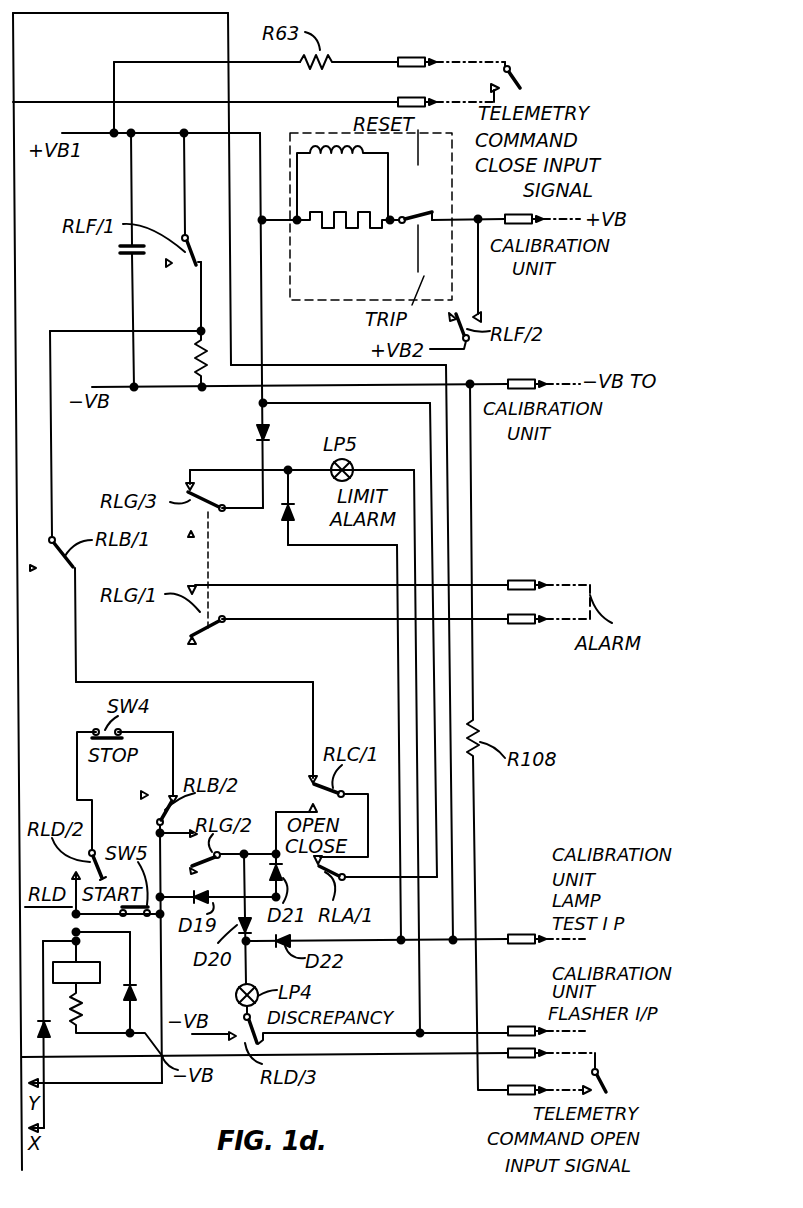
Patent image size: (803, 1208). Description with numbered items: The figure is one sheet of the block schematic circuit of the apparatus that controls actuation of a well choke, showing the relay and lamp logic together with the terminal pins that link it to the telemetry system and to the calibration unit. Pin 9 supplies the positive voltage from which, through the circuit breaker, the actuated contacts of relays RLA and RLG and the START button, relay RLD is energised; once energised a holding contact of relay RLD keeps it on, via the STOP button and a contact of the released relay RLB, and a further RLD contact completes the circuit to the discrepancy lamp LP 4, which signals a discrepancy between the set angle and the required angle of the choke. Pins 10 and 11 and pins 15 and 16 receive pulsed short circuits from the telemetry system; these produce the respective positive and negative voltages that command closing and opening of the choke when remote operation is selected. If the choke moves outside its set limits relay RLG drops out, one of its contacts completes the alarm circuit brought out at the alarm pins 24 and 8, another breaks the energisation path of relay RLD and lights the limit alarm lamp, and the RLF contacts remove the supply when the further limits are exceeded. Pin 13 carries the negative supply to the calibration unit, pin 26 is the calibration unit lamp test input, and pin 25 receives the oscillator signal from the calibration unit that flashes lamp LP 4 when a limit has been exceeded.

The discrepancy lamp 4 is at (63, 947).
The alarm output terminal 8 is at (518, 624).
The pin 9 is at (508, 212).
The pin 10 is at (412, 55).
The pin 11 is at (412, 97).
The -VB to calibration unit terminal 13 is at (520, 379).
The pin 15 is at (513, 1058).
The pin 16 is at (522, 1097).
The alarm output terminal 24 is at (522, 578).
The pin 25 is at (516, 1027).
The calibration unit lamp test input terminal 26 is at (522, 934).